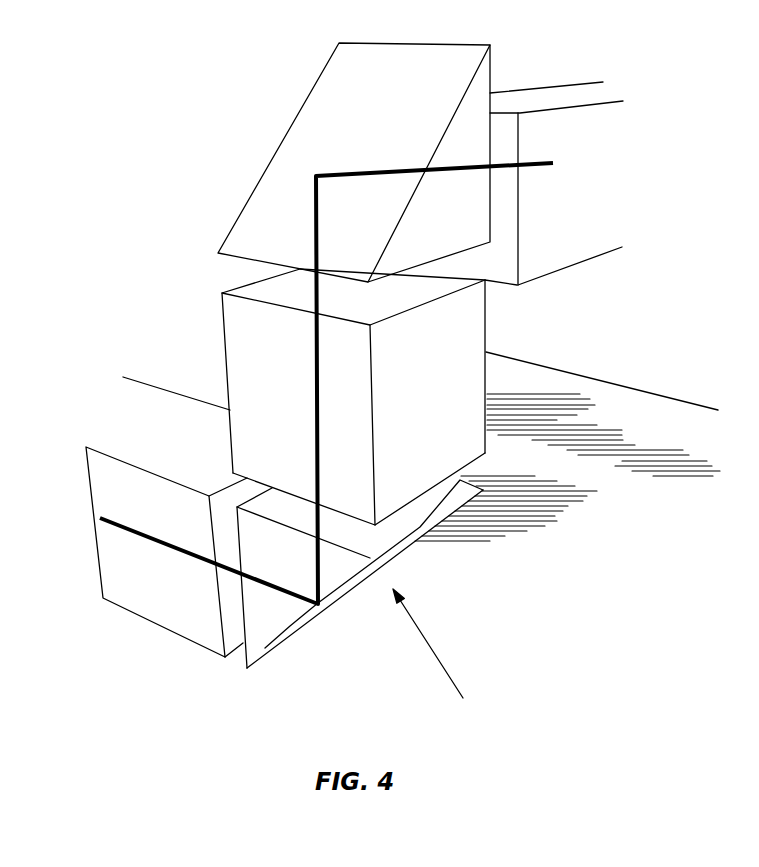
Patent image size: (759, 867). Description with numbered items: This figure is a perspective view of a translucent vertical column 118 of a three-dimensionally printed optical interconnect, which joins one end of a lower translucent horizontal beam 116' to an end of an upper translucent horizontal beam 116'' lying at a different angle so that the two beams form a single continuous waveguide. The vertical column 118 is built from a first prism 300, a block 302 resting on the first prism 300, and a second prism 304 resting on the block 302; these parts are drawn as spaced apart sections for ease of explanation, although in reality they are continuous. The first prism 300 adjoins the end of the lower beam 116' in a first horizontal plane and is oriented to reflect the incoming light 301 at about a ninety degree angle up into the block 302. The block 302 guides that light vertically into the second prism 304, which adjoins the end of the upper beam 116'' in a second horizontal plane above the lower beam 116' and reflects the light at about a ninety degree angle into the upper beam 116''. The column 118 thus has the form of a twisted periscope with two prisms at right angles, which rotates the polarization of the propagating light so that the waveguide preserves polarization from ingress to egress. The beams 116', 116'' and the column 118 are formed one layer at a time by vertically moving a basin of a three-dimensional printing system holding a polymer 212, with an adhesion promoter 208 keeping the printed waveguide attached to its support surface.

The second prism 304 is at (340, 100).
The block 302 is at (250, 348).
The incoming light 301 is at (160, 541).
The first prism 300 is at (262, 627).
The first translucent horizontal beam 116' is at (142, 517).
The second translucent horizontal beam 116'' is at (580, 184).
The polymer 212 is at (163, 173).
The adhesion promoter 208 is at (533, 608).
The vertical column 118 is at (439, 655).